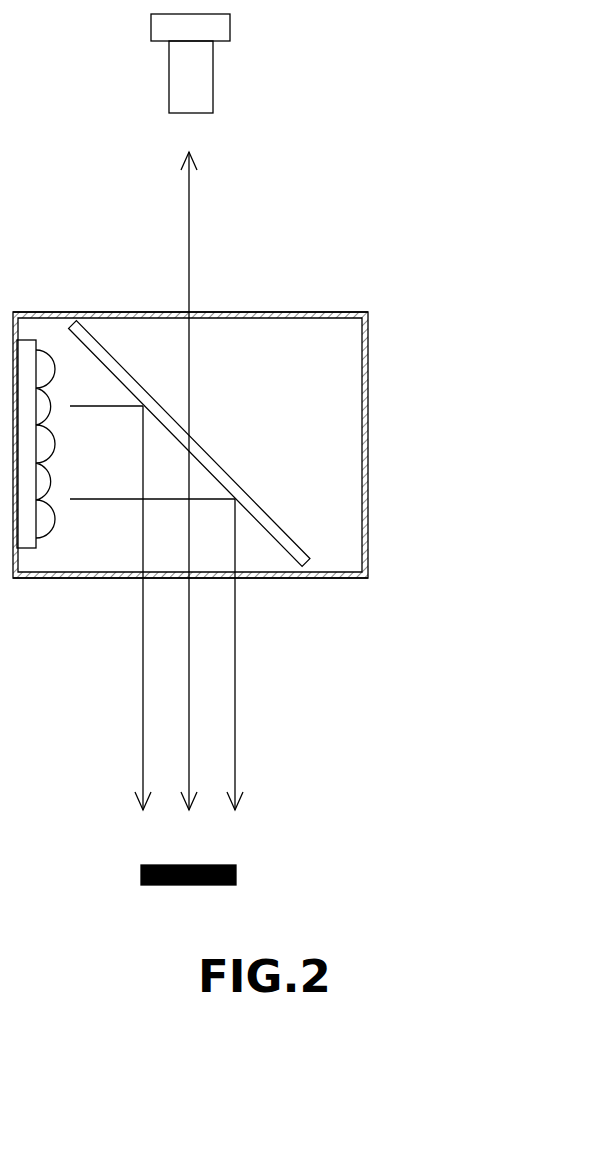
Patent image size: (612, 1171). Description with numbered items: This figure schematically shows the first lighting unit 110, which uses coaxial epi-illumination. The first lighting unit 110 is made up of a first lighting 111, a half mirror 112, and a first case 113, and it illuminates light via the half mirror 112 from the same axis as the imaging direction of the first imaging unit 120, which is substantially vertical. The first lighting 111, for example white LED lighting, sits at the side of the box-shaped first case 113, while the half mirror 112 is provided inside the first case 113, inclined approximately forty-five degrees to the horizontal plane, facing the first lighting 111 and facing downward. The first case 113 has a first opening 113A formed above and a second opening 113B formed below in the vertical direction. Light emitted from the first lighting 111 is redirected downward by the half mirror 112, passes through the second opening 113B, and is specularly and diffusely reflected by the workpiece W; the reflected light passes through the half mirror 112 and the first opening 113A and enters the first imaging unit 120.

The first lighting unit 110 is at (246, 435).
The first lighting 111 is at (52, 520).
The half mirror 112 is at (217, 462).
The first case 113 is at (370, 550).
The first opening 113A is at (305, 313).
The second opening 113B is at (310, 578).
The first imaging unit 120 is at (213, 77).
The workpiece W is at (236, 875).